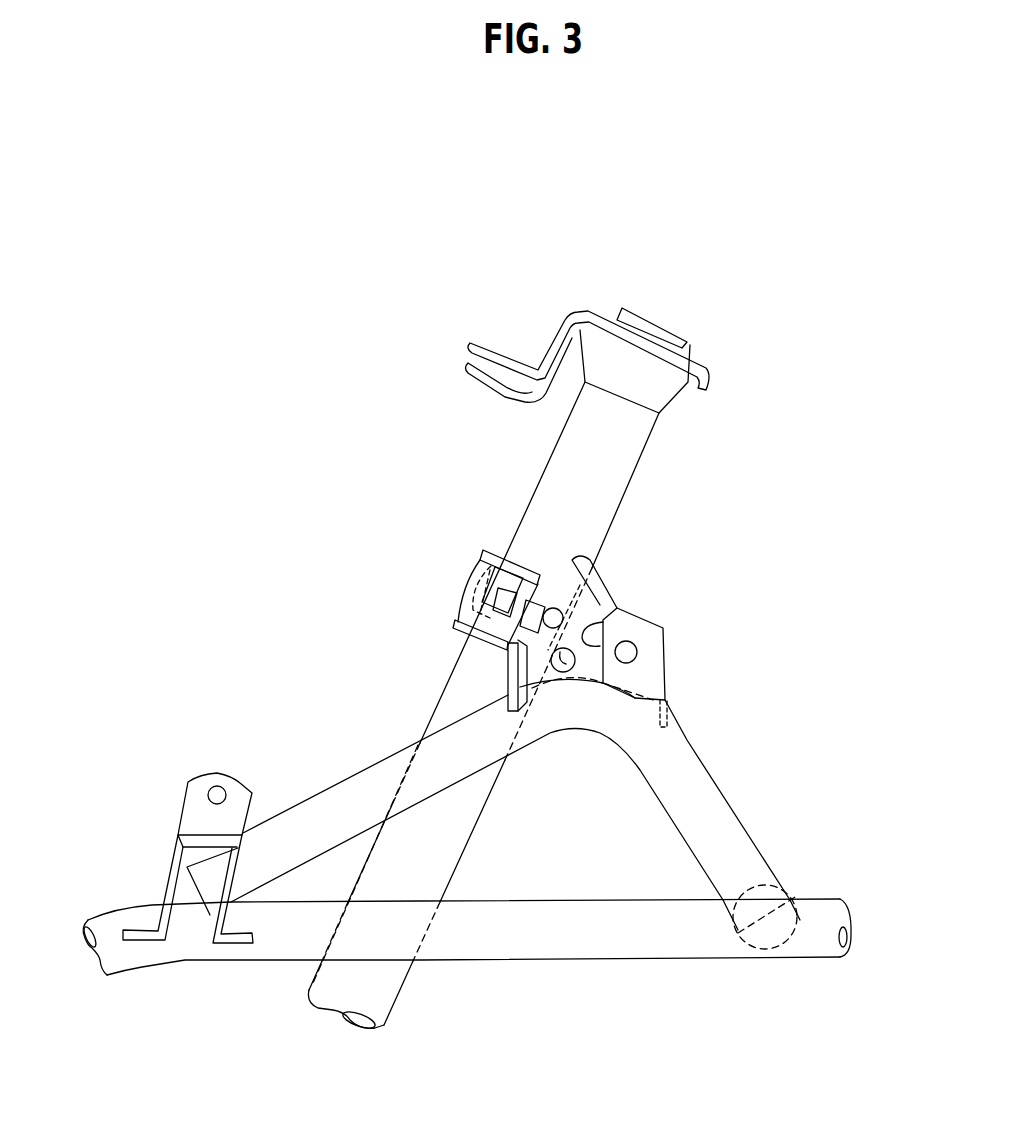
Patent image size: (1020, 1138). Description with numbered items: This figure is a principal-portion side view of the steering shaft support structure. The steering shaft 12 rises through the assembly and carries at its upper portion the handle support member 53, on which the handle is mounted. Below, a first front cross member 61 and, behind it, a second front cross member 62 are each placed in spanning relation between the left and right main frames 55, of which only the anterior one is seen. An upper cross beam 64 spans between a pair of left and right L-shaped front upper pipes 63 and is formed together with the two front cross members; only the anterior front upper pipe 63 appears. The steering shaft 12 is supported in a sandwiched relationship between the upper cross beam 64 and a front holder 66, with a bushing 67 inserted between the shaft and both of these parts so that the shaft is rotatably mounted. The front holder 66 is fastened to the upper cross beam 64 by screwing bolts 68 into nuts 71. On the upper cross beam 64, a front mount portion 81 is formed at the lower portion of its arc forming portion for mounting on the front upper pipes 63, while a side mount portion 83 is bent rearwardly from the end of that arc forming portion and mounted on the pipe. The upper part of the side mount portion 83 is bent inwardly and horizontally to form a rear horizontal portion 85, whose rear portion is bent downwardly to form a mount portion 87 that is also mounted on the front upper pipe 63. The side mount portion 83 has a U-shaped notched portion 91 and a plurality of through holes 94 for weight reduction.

The steering shaft 12 is at (645, 455).
The handle support member 53 is at (590, 306).
The main frame 55 is at (582, 960).
The first front cross member 61 is at (165, 876).
The second front cross member 62 is at (808, 905).
The front upper pipe 63 is at (330, 786).
The upper cross beam 64 is at (668, 617).
The front holder 66 is at (483, 550).
The bushing 67 is at (467, 580).
The bolt 68 is at (478, 606).
The nut 71 is at (575, 570).
The front mount portion 81 is at (508, 677).
The side mount portion 83 is at (597, 668).
The rear horizontal portion 85 is at (640, 614).
The rear mount portion 87 is at (667, 700).
The U-shaped notched portion 91 is at (605, 612).
The through hole 94 is at (637, 660).